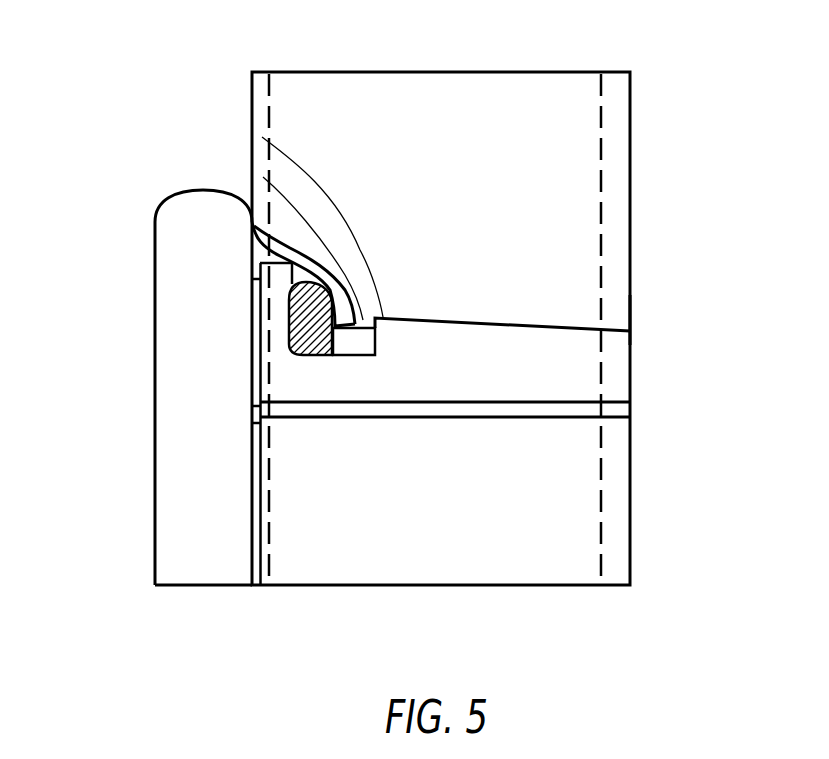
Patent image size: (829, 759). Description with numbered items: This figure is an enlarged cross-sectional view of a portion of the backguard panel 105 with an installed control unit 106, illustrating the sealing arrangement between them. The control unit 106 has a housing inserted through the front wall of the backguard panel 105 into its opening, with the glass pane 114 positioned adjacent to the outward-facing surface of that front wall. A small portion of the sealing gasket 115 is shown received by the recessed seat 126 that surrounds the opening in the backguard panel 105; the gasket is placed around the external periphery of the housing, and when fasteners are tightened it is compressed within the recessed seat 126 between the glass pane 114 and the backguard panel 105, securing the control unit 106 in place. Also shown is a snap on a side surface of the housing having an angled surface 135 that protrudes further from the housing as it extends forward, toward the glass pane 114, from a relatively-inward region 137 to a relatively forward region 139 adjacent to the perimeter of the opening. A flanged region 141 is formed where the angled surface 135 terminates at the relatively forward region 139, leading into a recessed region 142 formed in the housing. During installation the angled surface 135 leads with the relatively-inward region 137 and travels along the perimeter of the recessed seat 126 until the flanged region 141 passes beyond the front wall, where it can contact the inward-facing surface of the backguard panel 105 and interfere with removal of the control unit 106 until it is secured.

The backguard panel 105 is at (520, 83).
The control unit 106 is at (495, 568).
The glass pane 114 is at (205, 587).
The sealing gasket 115 is at (313, 340).
The recessed seat 126 is at (268, 230).
The angled surface 135 is at (513, 325).
The relatively-inward region 137 is at (631, 312).
The relatively forward region 139 is at (262, 137).
The flanged region 141 is at (263, 177).
The recessed region 142 is at (353, 343).